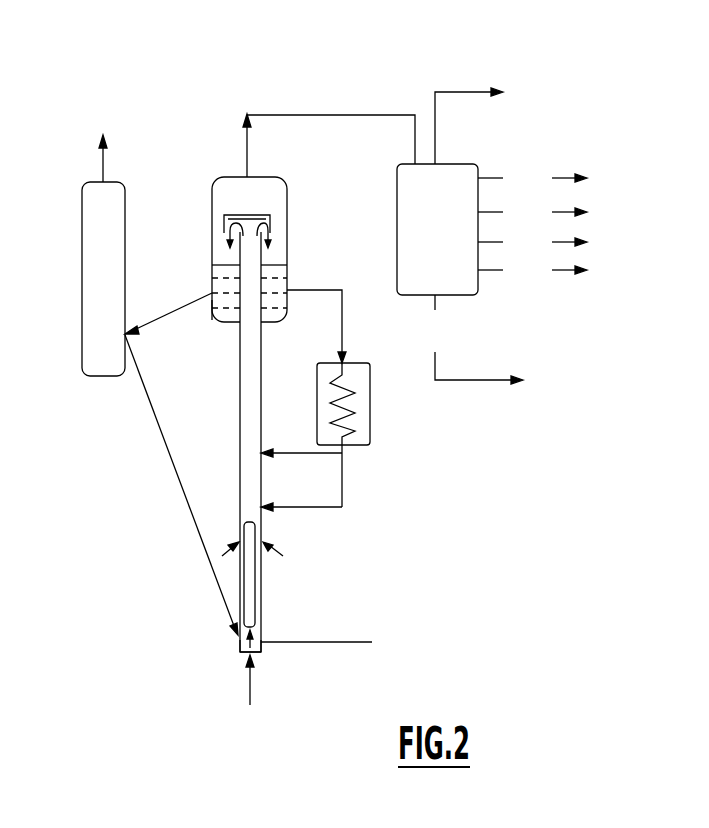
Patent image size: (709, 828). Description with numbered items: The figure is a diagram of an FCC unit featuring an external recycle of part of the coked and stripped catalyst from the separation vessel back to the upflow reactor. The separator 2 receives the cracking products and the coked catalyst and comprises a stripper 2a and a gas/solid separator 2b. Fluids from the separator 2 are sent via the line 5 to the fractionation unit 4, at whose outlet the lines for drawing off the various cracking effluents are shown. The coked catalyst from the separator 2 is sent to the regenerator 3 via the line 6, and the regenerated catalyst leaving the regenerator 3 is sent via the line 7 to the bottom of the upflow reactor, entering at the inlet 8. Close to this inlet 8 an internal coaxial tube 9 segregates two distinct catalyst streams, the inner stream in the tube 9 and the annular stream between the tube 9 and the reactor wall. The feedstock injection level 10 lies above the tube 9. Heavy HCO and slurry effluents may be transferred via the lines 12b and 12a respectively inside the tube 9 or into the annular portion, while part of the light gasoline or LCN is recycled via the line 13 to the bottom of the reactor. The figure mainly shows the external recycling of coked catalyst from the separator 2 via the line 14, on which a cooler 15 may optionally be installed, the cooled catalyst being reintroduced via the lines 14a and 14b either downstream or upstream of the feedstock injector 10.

The separator 2 is at (211, 200).
The stripper 2a is at (208, 314).
The gas/solid separator 2b is at (255, 214).
The regenerator 3 is at (82, 285).
The fractionation unit 4 is at (453, 164).
The line 5 is at (330, 115).
The line 6 is at (157, 319).
The line 7 is at (173, 462).
The inlet 8 is at (237, 643).
The coaxial tube 9 is at (252, 588).
The feedstock injection level 10 is at (256, 479).
The line 12a is at (283, 556).
The line 12b is at (305, 642).
The line 13 is at (252, 677).
The line 14 is at (342, 330).
The line 14a is at (298, 453).
The line 14b is at (330, 507).
The cooler 15 is at (398, 422).